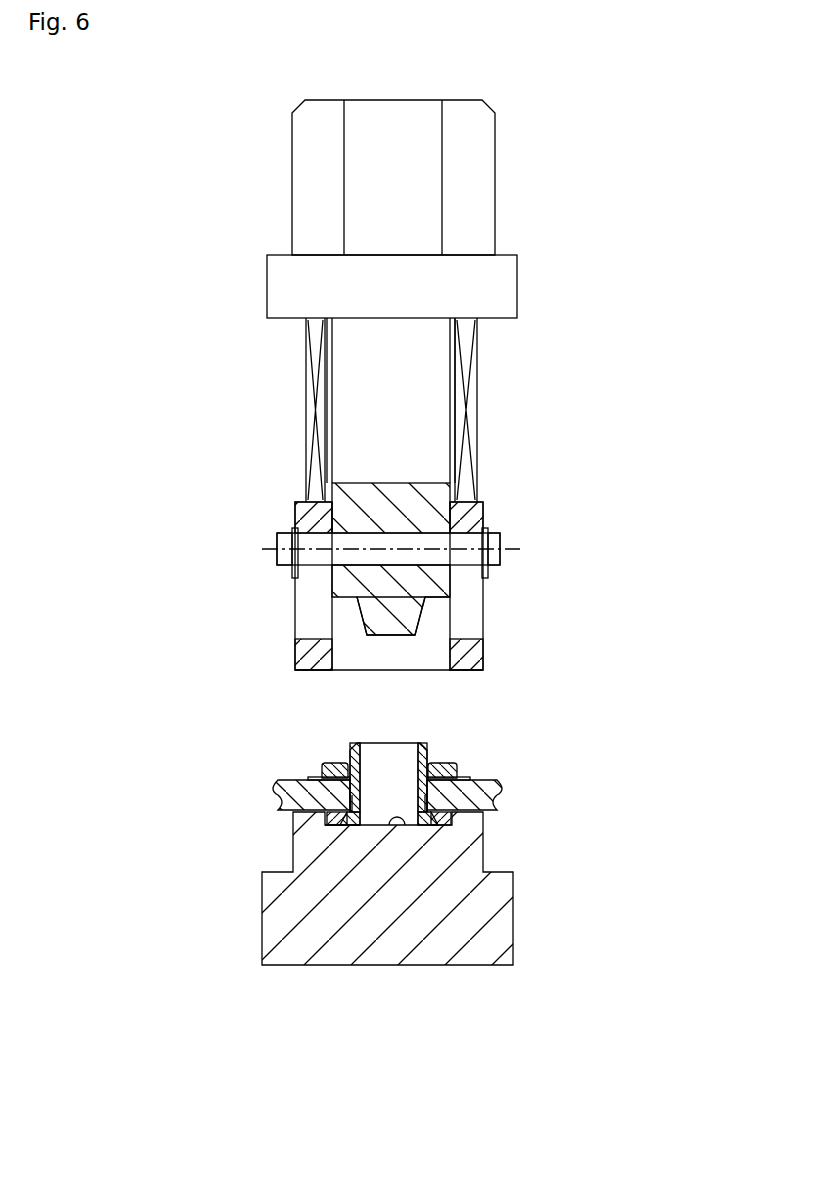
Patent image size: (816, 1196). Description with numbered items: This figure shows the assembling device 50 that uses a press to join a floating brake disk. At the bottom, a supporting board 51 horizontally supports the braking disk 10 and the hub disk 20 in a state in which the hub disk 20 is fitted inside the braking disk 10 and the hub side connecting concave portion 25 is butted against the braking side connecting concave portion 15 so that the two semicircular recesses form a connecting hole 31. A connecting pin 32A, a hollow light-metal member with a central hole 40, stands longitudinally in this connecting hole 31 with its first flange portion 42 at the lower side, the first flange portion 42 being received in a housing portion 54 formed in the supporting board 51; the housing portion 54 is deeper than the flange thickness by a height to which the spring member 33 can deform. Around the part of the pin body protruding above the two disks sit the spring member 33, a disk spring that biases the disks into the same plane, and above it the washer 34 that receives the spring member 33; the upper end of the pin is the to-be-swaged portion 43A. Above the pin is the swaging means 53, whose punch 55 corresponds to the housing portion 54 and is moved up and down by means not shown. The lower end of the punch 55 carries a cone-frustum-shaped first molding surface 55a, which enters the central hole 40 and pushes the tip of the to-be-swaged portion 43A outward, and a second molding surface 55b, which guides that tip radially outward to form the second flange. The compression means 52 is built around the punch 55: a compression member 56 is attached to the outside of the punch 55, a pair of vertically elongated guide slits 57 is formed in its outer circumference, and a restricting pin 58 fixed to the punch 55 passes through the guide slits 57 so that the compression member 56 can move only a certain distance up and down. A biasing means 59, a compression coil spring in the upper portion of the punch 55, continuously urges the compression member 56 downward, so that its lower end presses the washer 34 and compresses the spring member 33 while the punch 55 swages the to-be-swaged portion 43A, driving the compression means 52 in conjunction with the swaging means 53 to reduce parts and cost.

The assembling device 50 is at (632, 365).
The swaging means 53 is at (520, 410).
The biasing means 59 is at (472, 452).
The punch 55 is at (461, 513).
The first molding surface 55a is at (393, 603).
The second molding surface 55b is at (427, 597).
The compression member 56 is at (302, 520).
The guide slits 57 is at (300, 630).
The restricting pin 58 is at (502, 540).
The compression means 52 is at (554, 560).
The supporting board 51 is at (513, 908).
The hub disk 20 is at (277, 797).
The braking disk 10 is at (503, 811).
The central hole 40 is at (372, 742).
The housing portion 54 is at (397, 830).
The connecting hole 31 is at (398, 918).
The hub side connecting concave portion 25 is at (362, 808).
The braking side connecting concave portion 15 is at (415, 810).
The first flange portion 42 is at (327, 827).
The connecting pin 32A is at (352, 828).
The washer 34 is at (455, 762).
The to-be-swaged portion 43A is at (350, 753).
The spring member 33 is at (470, 778).